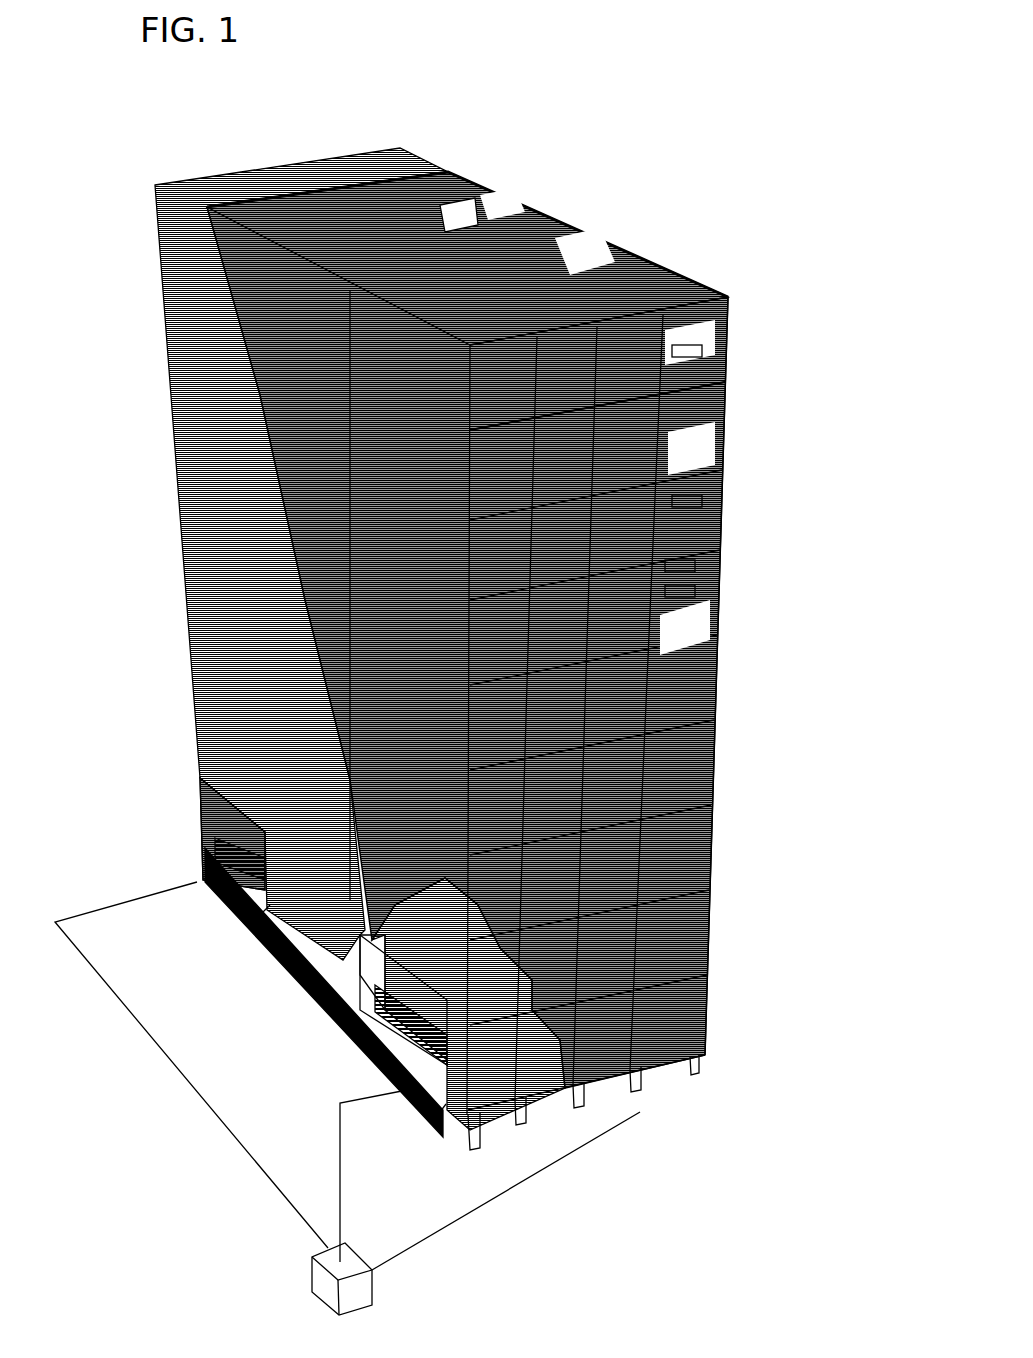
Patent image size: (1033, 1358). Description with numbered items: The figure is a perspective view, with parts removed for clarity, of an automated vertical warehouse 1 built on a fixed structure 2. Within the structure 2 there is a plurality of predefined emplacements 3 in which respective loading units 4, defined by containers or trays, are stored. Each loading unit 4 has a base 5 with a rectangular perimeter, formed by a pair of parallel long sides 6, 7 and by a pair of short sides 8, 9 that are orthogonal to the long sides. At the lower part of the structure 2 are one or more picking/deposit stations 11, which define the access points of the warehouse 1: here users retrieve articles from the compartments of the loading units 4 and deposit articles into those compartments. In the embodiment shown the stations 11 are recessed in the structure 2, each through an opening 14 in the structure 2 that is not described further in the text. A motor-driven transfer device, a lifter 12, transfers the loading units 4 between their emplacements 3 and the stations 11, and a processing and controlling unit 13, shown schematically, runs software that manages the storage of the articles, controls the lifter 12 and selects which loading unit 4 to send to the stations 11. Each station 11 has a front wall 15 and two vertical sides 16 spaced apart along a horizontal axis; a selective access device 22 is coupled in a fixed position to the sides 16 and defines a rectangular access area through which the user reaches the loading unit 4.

The automated warehouse 1 is at (636, 165).
The fixed structure 2 is at (630, 1105).
The predefined emplacements 3 is at (690, 736).
The loading units 4 is at (478, 188).
The base 5 is at (692, 388).
The long side 6 is at (343, 213).
The long side 7 is at (407, 200).
The short side 8 is at (373, 203).
The short side 9 is at (462, 218).
The picking/deposit stations 11 is at (205, 892).
The lifter 12 is at (602, 1120).
The processing and controlling unit 13 is at (315, 1274).
The opening 14 is at (196, 803).
The front wall 15 is at (262, 925).
The vertical sides 16 is at (205, 842).
The selective access device 22 is at (266, 940).